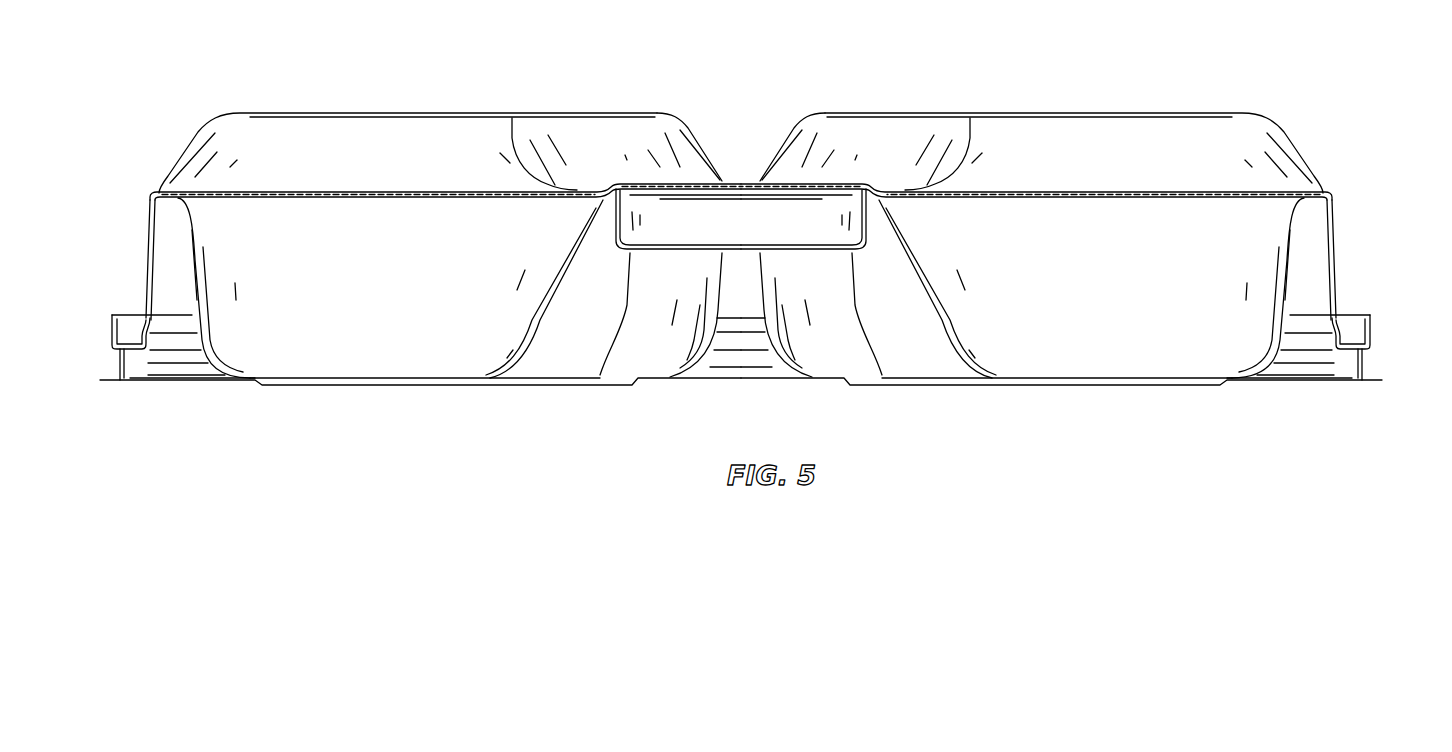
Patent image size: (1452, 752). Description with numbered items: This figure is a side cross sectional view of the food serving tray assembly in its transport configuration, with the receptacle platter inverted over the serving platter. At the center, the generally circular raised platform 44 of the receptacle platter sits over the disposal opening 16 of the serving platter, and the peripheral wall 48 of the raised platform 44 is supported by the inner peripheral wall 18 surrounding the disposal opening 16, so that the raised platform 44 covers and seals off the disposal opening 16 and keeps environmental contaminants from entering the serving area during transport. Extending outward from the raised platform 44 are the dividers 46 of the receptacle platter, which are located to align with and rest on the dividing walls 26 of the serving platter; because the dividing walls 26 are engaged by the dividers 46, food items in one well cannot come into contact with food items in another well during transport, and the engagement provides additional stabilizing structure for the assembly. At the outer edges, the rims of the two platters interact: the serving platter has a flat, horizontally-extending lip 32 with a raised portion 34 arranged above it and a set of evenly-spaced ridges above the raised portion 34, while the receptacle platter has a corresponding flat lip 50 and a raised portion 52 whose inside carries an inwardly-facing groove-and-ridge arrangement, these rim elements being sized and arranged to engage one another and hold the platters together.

The disposal opening 16 is at (741, 288).
The inner peripheral wall 18 is at (600, 375).
The dividing walls 26 is at (360, 312).
The lip 32 is at (113, 380).
The raised portion 34 is at (142, 372).
The raised platform 44 is at (745, 188).
The dividers 46 is at (292, 170).
The inner peripheral wall 48 is at (600, 150).
The lip 50 is at (112, 315).
The raised portion 52 is at (117, 335).